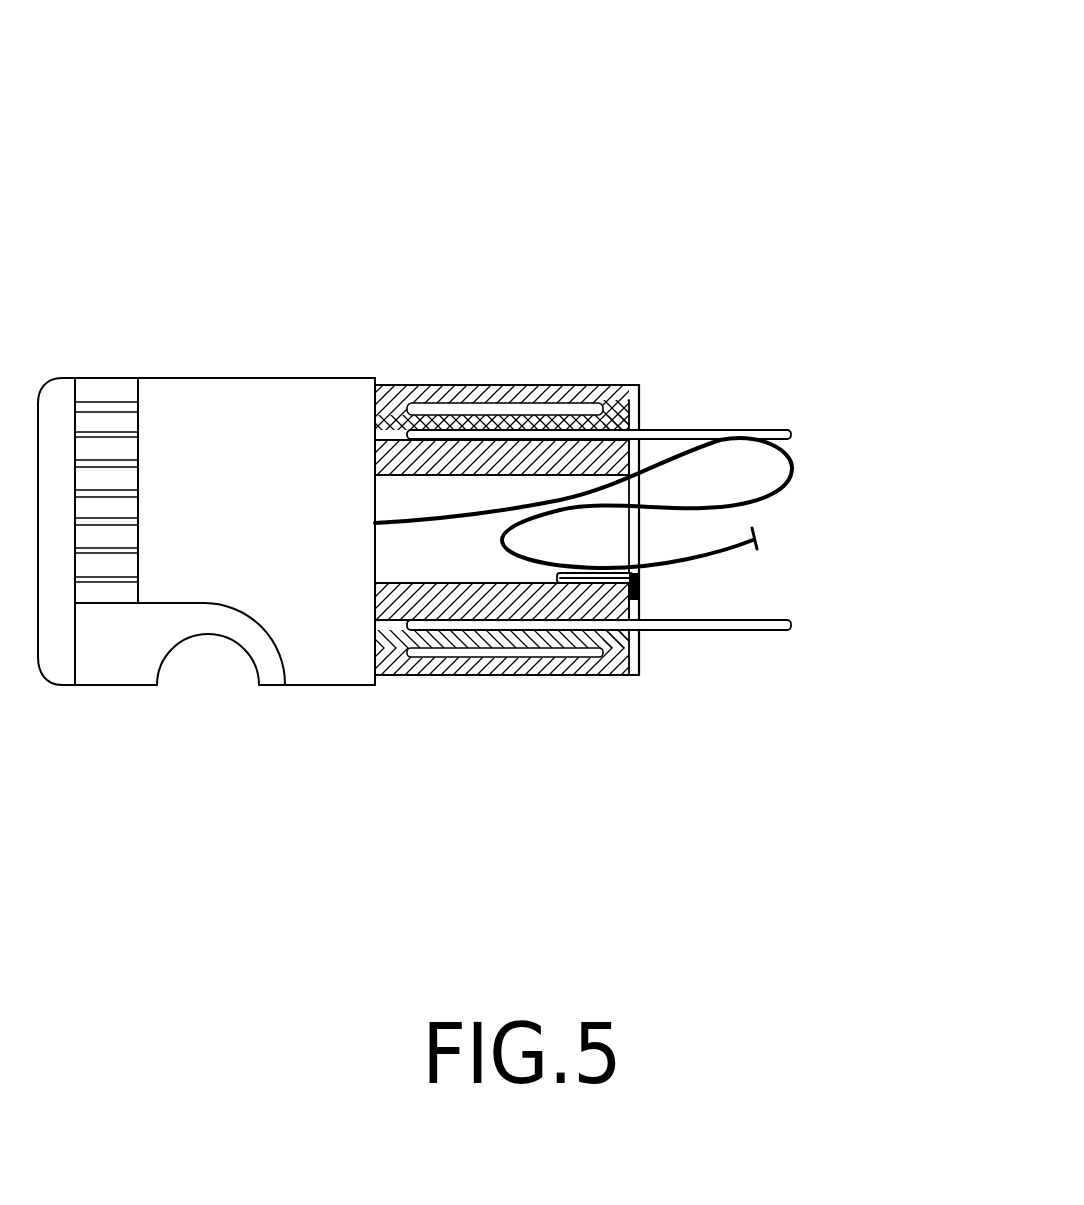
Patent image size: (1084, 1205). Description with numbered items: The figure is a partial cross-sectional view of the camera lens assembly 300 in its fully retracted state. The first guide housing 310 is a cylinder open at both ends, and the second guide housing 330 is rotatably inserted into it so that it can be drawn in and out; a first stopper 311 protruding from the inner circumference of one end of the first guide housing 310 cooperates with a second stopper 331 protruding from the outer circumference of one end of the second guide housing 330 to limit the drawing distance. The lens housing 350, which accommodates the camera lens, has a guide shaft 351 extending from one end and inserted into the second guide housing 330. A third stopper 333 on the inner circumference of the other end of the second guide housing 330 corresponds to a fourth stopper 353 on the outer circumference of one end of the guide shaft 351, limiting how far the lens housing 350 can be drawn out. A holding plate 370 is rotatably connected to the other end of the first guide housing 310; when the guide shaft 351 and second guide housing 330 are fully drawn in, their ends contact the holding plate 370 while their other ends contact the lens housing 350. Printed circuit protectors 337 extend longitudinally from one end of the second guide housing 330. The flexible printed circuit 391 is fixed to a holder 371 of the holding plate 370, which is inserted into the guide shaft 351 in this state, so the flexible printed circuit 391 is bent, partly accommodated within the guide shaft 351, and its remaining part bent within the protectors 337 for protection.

The camera lens assembly 300 is at (547, 54).
The first guide housing 310 is at (503, 395).
The first stopper 311 is at (405, 405).
The second guide housing 330 is at (567, 408).
The second stopper 331 is at (645, 408).
The third stopper 333 is at (392, 410).
The printed circuit protectors 337 is at (791, 434).
The lens housing 350 is at (195, 402).
The guide shaft 351 is at (467, 607).
The fourth stopper 353 is at (612, 656).
The holding plate 370 is at (688, 591).
The holder 371 is at (595, 583).
The flexible printed circuit 391 is at (793, 480).